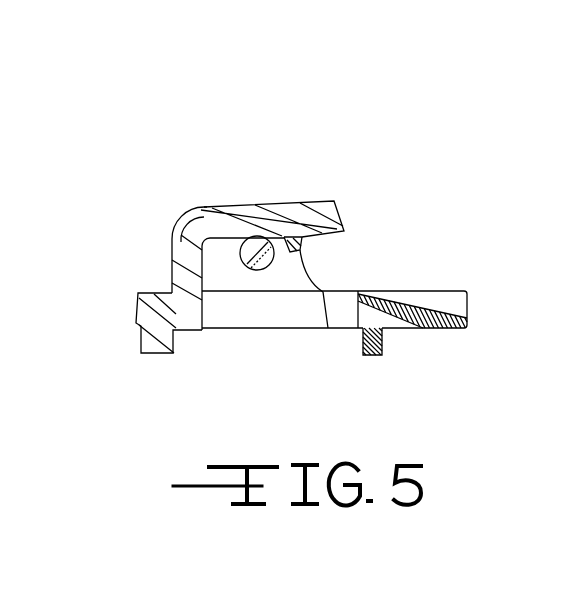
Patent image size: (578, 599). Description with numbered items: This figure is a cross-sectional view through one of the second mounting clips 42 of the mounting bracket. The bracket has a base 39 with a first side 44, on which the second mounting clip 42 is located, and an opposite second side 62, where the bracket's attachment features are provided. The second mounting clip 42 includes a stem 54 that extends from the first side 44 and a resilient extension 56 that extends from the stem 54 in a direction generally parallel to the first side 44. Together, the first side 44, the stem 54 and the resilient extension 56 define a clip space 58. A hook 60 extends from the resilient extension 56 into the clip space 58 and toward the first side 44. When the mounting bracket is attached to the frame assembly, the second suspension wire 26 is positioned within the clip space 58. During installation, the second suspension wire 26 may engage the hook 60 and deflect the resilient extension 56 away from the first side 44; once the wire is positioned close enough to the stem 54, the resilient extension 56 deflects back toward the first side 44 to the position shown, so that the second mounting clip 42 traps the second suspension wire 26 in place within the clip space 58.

The second suspension wire 26 is at (258, 270).
The base 39 is at (455, 306).
The second mounting clip 42 is at (207, 223).
The first side 44 is at (424, 290).
The stem 54 is at (173, 263).
The resilient extension 56 is at (262, 207).
The clip space 58 is at (325, 268).
The hook 60 is at (328, 328).
The second side 62 is at (448, 331).